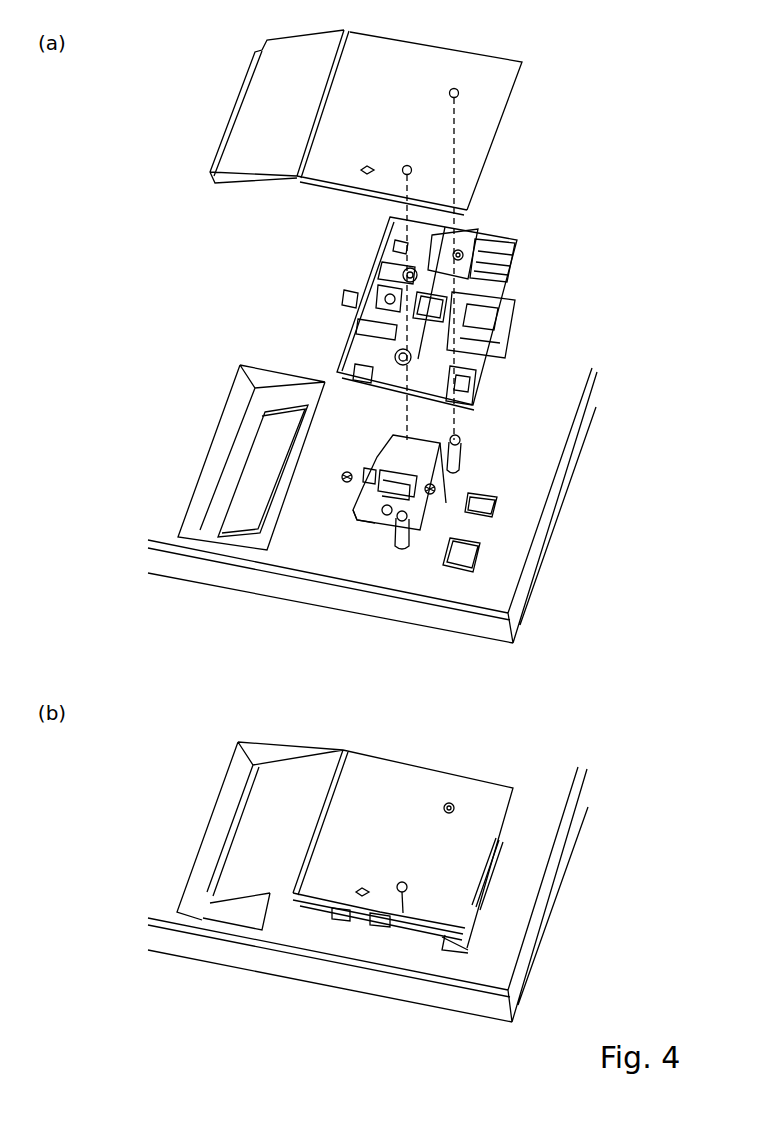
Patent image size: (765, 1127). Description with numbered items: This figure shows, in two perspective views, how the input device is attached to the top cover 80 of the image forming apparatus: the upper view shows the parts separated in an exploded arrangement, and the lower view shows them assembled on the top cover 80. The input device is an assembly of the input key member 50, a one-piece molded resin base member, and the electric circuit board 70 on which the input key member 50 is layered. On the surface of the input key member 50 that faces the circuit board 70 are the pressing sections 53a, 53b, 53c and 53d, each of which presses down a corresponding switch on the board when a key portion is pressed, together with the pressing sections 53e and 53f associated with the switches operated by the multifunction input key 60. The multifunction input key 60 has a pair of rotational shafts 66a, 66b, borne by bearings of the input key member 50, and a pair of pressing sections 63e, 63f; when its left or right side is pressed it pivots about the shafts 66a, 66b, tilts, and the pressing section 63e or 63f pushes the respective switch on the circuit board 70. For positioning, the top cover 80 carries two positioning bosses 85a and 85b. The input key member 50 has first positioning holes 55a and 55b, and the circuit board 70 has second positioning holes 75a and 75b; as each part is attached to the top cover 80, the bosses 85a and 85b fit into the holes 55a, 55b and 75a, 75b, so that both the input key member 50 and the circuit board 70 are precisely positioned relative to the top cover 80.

The input key member 50 is at (348, 333).
The pressing section 53a is at (493, 297).
The pressing section 53b is at (478, 233).
The pressing section 53c is at (478, 363).
The pressing section 53d is at (403, 275).
The pressing section 53e is at (400, 245).
The pressing section 53f is at (347, 310).
The first positioning hole 55a is at (500, 270).
The first positioning hole 55b is at (396, 357).
The multifunction input key 60 is at (410, 522).
The pressing section 63e is at (438, 484).
The pressing section 63f is at (418, 530).
The rotational shaft 66a is at (360, 515).
The rotational shaft 66b is at (446, 505).
The electric circuit board 70 is at (474, 128).
The second positioning hole 75a is at (455, 89).
The second positioning hole 75b is at (405, 163).
The top cover 80 is at (497, 567).
The positioning boss 85a is at (470, 439).
The positioning boss 85b is at (408, 518).